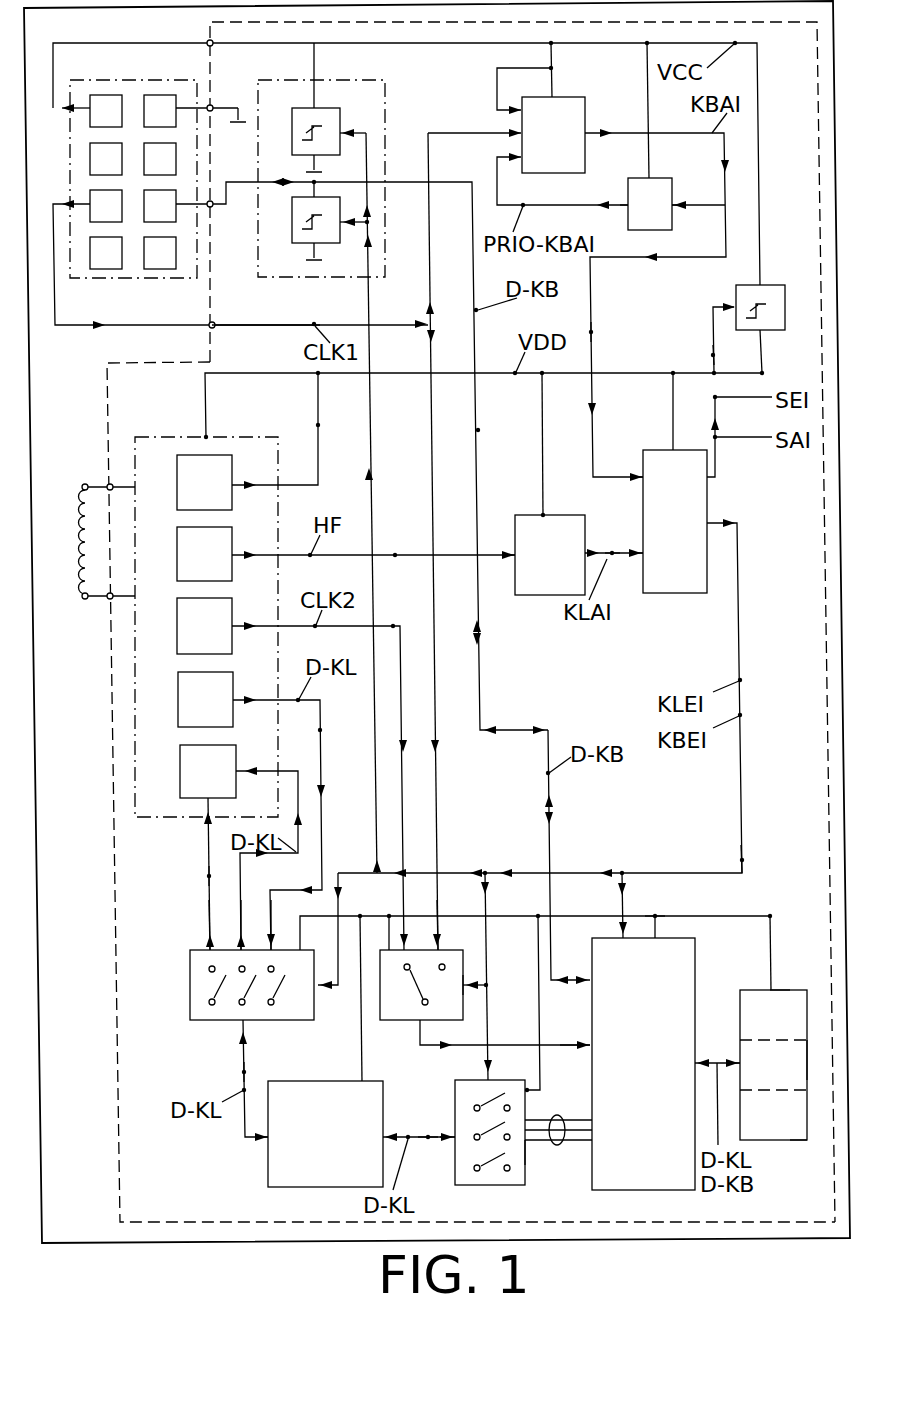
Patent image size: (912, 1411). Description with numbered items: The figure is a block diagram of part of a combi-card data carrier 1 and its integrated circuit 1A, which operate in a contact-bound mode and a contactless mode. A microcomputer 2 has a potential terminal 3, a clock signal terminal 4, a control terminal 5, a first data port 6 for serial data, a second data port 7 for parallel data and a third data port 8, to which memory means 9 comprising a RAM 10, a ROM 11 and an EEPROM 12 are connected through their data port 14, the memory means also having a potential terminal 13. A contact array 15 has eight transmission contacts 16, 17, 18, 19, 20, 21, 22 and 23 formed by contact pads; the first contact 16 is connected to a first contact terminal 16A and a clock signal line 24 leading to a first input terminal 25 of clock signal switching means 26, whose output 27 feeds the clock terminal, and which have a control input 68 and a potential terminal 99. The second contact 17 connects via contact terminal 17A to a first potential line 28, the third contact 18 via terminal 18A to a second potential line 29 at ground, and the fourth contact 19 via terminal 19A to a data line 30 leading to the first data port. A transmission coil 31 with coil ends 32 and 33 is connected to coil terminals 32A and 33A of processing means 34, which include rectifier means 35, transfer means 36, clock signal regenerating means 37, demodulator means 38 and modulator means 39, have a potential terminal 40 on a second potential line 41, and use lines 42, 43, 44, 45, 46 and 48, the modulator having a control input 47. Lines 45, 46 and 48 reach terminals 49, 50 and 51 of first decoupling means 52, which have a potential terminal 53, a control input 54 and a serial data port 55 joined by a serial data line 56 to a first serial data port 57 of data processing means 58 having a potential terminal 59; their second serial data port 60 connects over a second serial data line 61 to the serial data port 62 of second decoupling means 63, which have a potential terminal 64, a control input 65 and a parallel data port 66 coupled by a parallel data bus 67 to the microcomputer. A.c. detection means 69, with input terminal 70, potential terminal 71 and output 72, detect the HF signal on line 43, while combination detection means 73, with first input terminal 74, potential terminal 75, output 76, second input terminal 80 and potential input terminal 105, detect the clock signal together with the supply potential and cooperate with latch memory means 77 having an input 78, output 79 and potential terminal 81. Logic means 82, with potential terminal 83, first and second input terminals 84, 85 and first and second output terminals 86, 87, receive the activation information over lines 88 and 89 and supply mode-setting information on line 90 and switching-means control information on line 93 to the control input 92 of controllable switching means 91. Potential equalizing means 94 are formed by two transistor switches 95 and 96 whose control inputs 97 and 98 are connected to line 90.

The data carrier 1 is at (437, 647).
The circuit 1A is at (443, 792).
The microcomputer 2 is at (651, 1084).
The potential terminal 3 is at (657, 937).
The clock signal terminal 4 is at (587, 1043).
The control terminal 5 is at (617, 937).
The first data port 6 is at (588, 977).
The second data port 7 is at (635, 1078).
The third data port 8 is at (697, 1060).
The memory means 9 is at (773, 1093).
The RAM 10 is at (781, 996).
The ROM 11 is at (806, 1060).
The EEPROM 12 is at (796, 1131).
The potential terminal 13 is at (769, 989).
The data port 14 is at (739, 1058).
The contact array 15 is at (139, 200).
The first transmission contact 16 is at (97, 198).
The first contact terminal 16A is at (214, 327).
The second transmission contact 17 is at (101, 100).
The second contact terminal 17A is at (208, 42).
The third transmission contact 18 is at (157, 100).
The third contact terminal 18A is at (213, 112).
The fourth transmission contact 19 is at (170, 213).
The fourth contact terminal 19A is at (213, 207).
The fifth transmission contact 20 is at (98, 157).
The sixth transmission contact 21 is at (170, 161).
The seventh transmission contact 22 is at (101, 258).
The eighth transmission contact 23 is at (155, 258).
The clock signal line 24 is at (391, 322).
The first input terminal 25 is at (441, 946).
The clock signal switching means 26 is at (414, 1014).
The output 27 is at (422, 1023).
The first electrically conductive potential line 28 is at (417, 44).
The second electrically conductive potential line 29 is at (227, 107).
The data line 30 is at (479, 429).
The transmission coil 31 is at (78, 515).
The coil end 32 is at (83, 485).
The coil terminal 32A is at (109, 485).
The coil end 33 is at (84, 598).
The coil terminal 33A is at (109, 598).
The processing means 34 is at (205, 594).
The rectifier means 35 is at (183, 480).
The transfer means 36 is at (183, 555).
The clock signal regenerating means 37 is at (183, 625).
The demodulator means 38 is at (185, 700).
The modulator means 39 is at (185, 775).
The potential terminal 40 is at (207, 435).
The second electrically conductive potential line 41 is at (395, 374).
The electrically conductive line 42 is at (317, 424).
The electrically conductive line 43 is at (396, 554).
The electrically conductive line 44 is at (394, 625).
The second input terminal / electrically conductive line 45 is at (322, 730).
The electrically conductive line 46 is at (296, 769).
The control input 47 is at (179, 873).
The electrically conductive line 48 is at (208, 876).
The terminal 49 is at (268, 935).
The terminal 50 is at (238, 936).
The terminal 51 is at (206, 946).
The first controllable decoupling means 52 is at (230, 1003).
The potential terminal 53 is at (299, 947).
The control input 54 is at (320, 990).
The serial data port 55 is at (229, 1080).
The first bidirectional serial data line 56 is at (246, 1071).
The first serial data port 57 is at (265, 1140).
The data processing means 58 is at (305, 1149).
The potential terminal 59 is at (361, 1080).
The second serial data port 60 is at (390, 1133).
The second serial data line 61 is at (428, 1139).
The serial data port 62 is at (454, 1134).
The second controllable decoupling means 63 is at (488, 1150).
The potential terminal 64 is at (529, 1091).
The control input 65 is at (491, 1079).
The parallel data port 66 is at (527, 1152).
The parallel data bus 67 is at (557, 1150).
The control input 68 is at (492, 960).
The a.c. detection means 69 is at (550, 581).
The input terminal 70 is at (514, 548).
The potential terminal 71 is at (542, 513).
The output 72 is at (583, 550).
The combination detection means 73 is at (574, 126).
The first input terminal 74 is at (518, 132).
The potential terminal 75 is at (553, 96).
The output 76 is at (589, 136).
The memory means 77 is at (673, 215).
The input 78 is at (673, 200).
The output 79 is at (626, 203).
The second input terminal 80 is at (518, 156).
The potential terminal 81 is at (650, 177).
The logic means 82 is at (682, 547).
The potential terminal 83 is at (672, 448).
The first input terminal 84 is at (643, 562).
The second input terminal 85 is at (642, 470).
The first output terminal 86 is at (709, 521).
The second output terminal 87 is at (709, 480).
The electrically conductive line 88 is at (613, 551).
The electrically conductive line 89 is at (592, 331).
The electrically conductive line 90 is at (741, 859).
The controllable switching means 91 is at (776, 289).
The control input 92 is at (733, 302).
The electrically conductive line 93 is at (712, 354).
The potential equalizing means 94 is at (321, 197).
The controllable transistor switch 95 is at (296, 118).
The controllable transistor switch 96 is at (302, 240).
The control input 97 is at (341, 127).
The control input 98 is at (341, 230).
The potential terminal 99 is at (388, 948).
The potential input terminal 105 is at (518, 108).